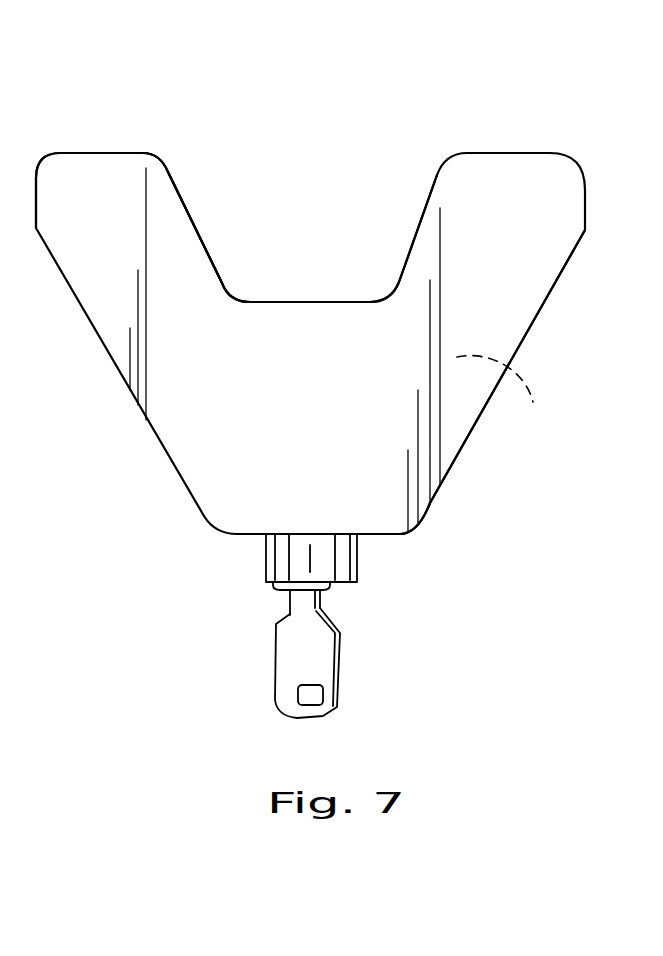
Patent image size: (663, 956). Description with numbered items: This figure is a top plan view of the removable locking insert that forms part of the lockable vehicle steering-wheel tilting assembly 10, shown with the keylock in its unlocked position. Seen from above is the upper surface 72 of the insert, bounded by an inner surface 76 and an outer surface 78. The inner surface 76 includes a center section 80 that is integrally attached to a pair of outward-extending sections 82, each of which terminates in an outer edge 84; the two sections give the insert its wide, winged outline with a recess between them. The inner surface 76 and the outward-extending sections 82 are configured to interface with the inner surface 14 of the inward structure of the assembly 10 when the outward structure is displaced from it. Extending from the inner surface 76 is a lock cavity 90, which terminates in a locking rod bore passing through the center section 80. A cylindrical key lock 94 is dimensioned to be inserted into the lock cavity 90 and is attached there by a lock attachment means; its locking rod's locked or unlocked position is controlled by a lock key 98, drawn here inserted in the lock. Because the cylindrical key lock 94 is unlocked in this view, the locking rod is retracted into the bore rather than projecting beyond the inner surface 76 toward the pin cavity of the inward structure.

The lockable vehicle steering-wheel tilting assembly 10 is at (552, 343).
The inner surface 14 is at (507, 366).
The upper surface 72 is at (172, 415).
The inner surface 76 is at (302, 300).
The outer surface 78 is at (380, 535).
The center section 80 is at (302, 300).
The outward-extending sections 82 is at (69, 198).
The outer edge 84 is at (147, 153).
The lock cavity 90 is at (265, 537).
The cylindrical key lock 94 is at (273, 582).
The lock key 98 is at (323, 660).